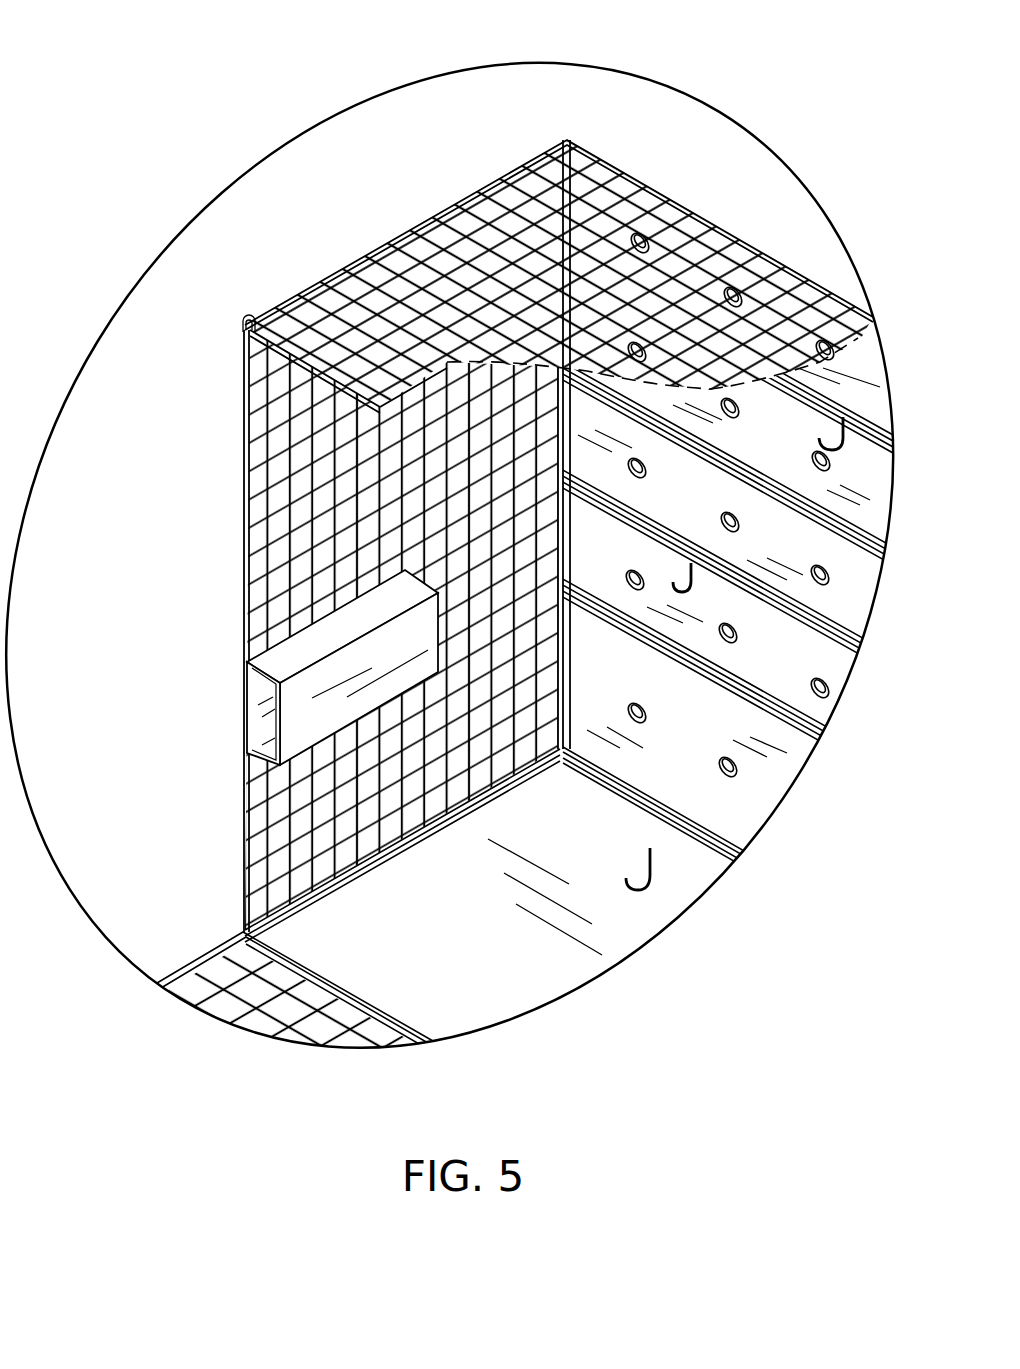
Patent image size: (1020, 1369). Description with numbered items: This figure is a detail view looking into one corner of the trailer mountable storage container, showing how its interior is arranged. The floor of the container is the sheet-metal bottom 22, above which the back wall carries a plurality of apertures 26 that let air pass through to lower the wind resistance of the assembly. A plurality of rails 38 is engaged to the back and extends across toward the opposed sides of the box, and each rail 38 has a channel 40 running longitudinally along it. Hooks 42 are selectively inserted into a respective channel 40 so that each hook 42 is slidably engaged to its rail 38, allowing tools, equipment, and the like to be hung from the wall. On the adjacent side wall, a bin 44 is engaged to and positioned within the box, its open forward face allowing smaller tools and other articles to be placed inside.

The bottom 22 is at (500, 942).
The apertures 26 is at (640, 462).
The rails 38 is at (691, 562).
The channel 40 is at (790, 425).
The hooks 42 is at (845, 442).
The bins 44 is at (328, 638).